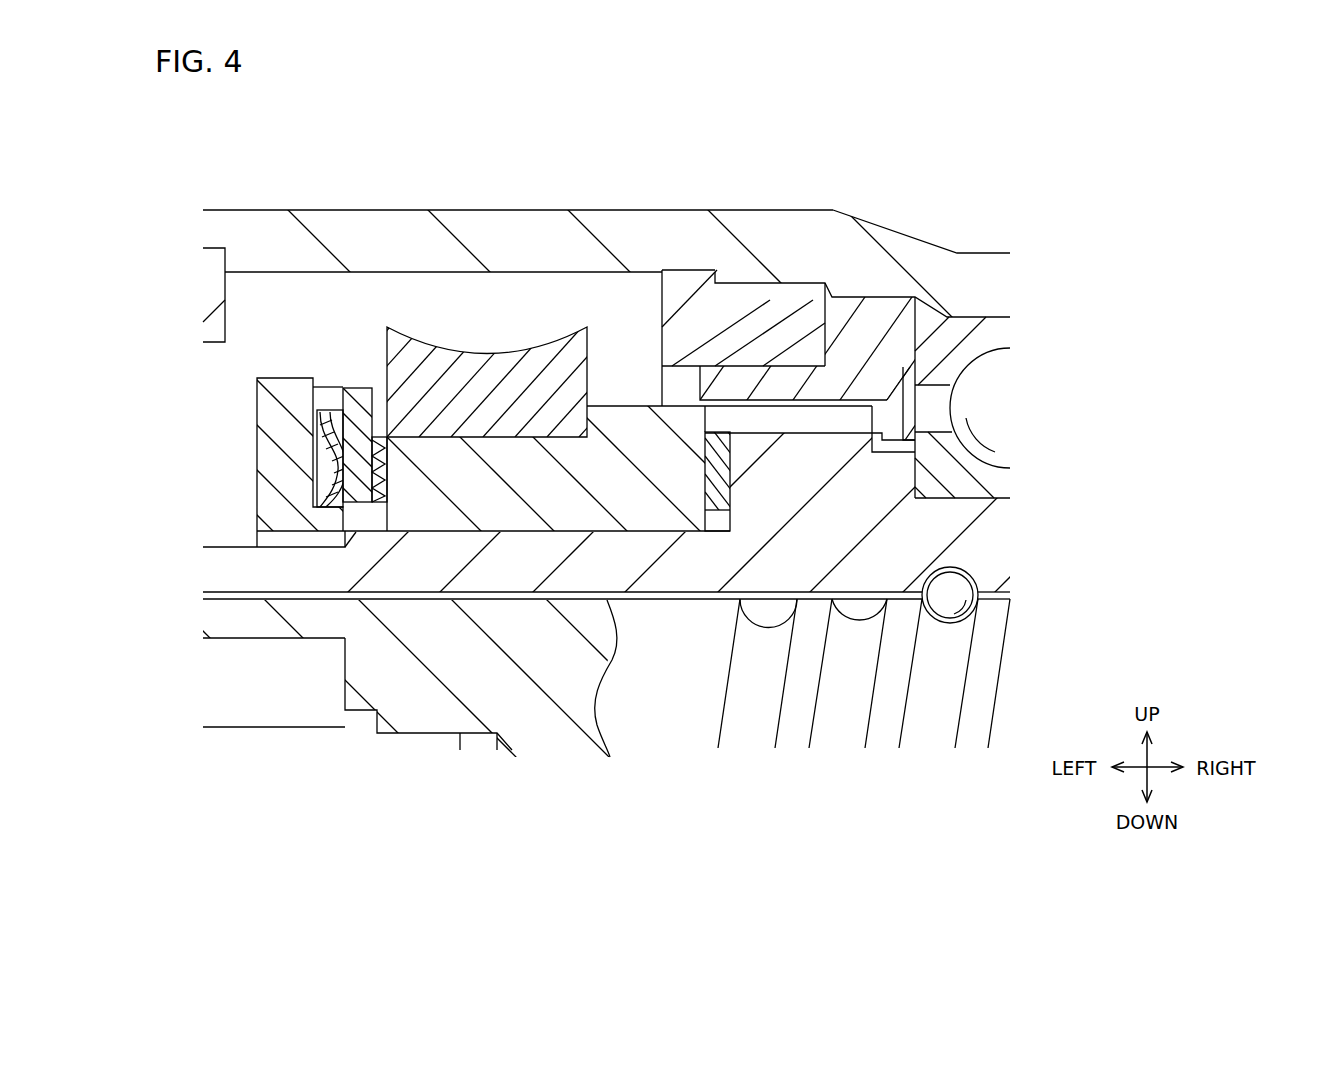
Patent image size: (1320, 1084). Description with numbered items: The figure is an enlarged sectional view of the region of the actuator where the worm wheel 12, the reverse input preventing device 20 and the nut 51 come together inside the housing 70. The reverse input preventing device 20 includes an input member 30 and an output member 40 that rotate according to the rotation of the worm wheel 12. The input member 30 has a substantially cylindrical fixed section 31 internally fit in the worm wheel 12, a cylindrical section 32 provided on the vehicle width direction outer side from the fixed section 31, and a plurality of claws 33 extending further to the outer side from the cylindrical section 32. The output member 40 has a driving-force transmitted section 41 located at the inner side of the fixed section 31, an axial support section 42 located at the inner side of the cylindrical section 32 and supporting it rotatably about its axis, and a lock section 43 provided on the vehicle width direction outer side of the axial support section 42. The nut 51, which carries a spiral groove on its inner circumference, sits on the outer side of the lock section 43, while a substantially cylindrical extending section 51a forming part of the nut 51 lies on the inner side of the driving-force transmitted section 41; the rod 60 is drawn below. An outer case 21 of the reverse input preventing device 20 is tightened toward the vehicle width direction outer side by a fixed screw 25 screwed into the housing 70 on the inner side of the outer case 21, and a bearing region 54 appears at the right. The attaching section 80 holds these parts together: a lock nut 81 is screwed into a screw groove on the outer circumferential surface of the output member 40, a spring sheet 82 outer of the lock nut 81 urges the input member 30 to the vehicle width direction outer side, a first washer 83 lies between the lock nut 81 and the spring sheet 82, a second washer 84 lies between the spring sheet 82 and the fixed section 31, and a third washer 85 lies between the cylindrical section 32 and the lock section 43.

The worm wheel 12 is at (480, 357).
The reverse input preventing device 20 is at (860, 294).
The outer case 21 is at (883, 318).
The fixed screw 25 is at (688, 280).
The input member 30 is at (620, 403).
The fixed section 31 is at (472, 503).
The cylindrical section 32 is at (630, 503).
The claws 33 is at (797, 420).
The output member 40 is at (515, 602).
The driving-force transmitted section 41 is at (472, 581).
The axial support section 42 is at (630, 581).
The lock section 43 is at (795, 546).
The nut 51 is at (943, 555).
The extending section 51a is at (302, 547).
The bearing 54 is at (967, 315).
The rod 60 is at (673, 727).
The housing 70 is at (381, 232).
The attaching section 80 is at (323, 412).
The lock nut 81 is at (270, 455).
The spring sheet 82 is at (348, 386).
The first washer 83 is at (332, 392).
The second washer 84 is at (384, 468).
The third washer 85 is at (720, 512).